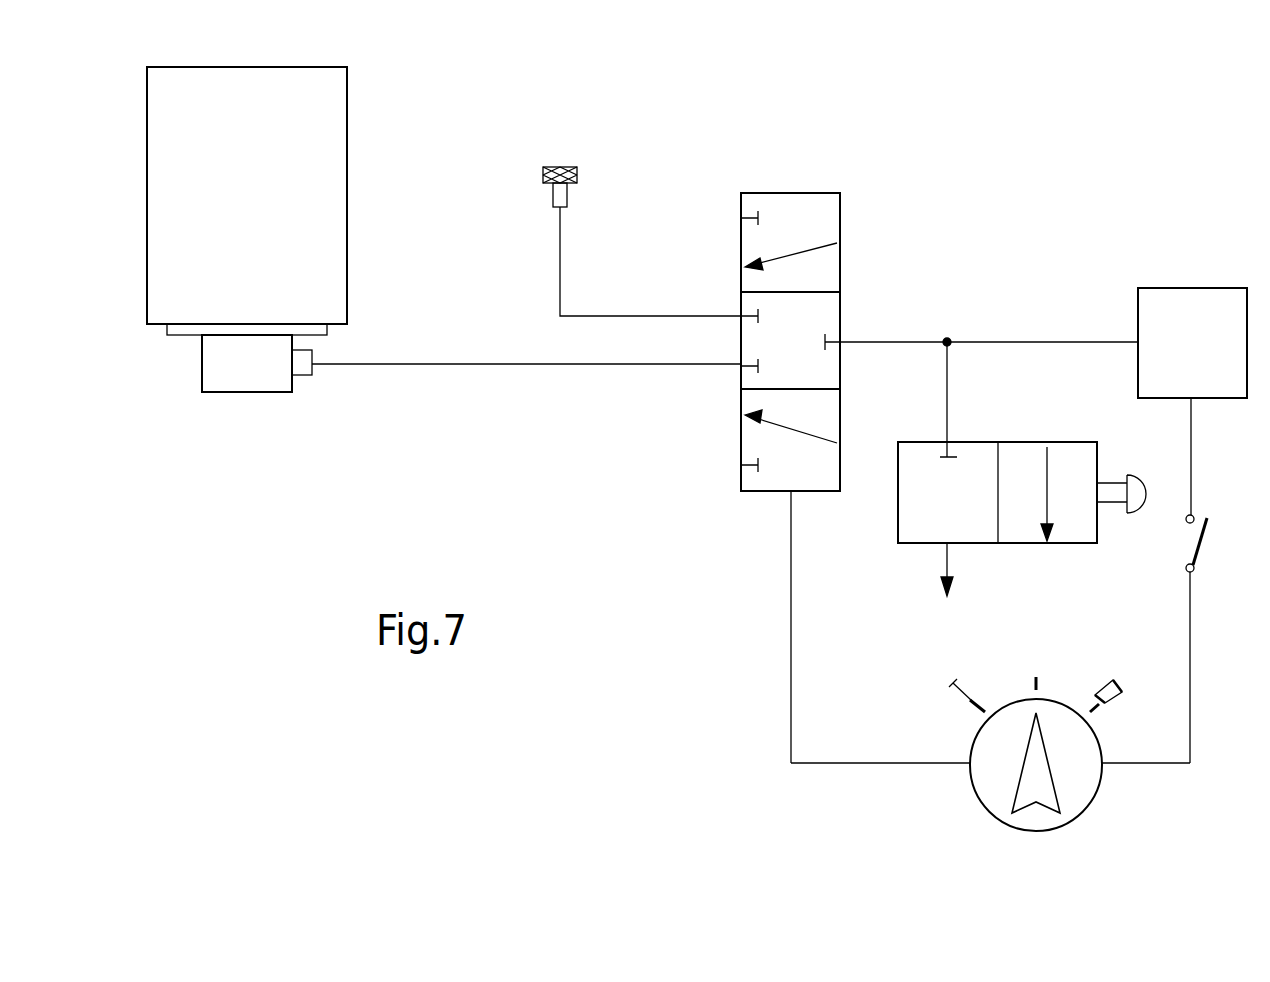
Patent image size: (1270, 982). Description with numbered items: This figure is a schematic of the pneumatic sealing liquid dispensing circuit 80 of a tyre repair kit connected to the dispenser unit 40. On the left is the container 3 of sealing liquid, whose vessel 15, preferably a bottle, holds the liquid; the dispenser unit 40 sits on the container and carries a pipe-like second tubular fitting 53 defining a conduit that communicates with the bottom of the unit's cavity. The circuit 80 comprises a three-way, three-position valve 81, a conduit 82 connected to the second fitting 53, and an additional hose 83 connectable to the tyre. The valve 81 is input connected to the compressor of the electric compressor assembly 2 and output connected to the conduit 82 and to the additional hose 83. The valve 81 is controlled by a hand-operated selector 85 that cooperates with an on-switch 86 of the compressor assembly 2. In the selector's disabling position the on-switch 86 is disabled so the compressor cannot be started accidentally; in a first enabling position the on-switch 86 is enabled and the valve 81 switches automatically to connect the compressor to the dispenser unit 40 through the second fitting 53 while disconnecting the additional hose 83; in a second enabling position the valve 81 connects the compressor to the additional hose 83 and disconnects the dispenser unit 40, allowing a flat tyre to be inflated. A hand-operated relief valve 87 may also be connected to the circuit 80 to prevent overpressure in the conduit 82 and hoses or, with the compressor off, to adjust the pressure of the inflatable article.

The electric compressor assembly 2 is at (1190, 282).
The container 3 is at (352, 165).
The vessel 15 is at (318, 235).
The dispenser unit 40 is at (198, 360).
The second tubular fitting 53 is at (305, 370).
The pneumatic sealing liquid dispensing circuit 80 is at (958, 322).
The three-way, three-position valve 81 is at (752, 485).
The conduit 82 is at (562, 366).
The additional hose 83 is at (645, 313).
The hand-operated selector 85 is at (992, 775).
The on-switch 86 is at (1203, 543).
The hand-operated relief valve 87 is at (1088, 457).